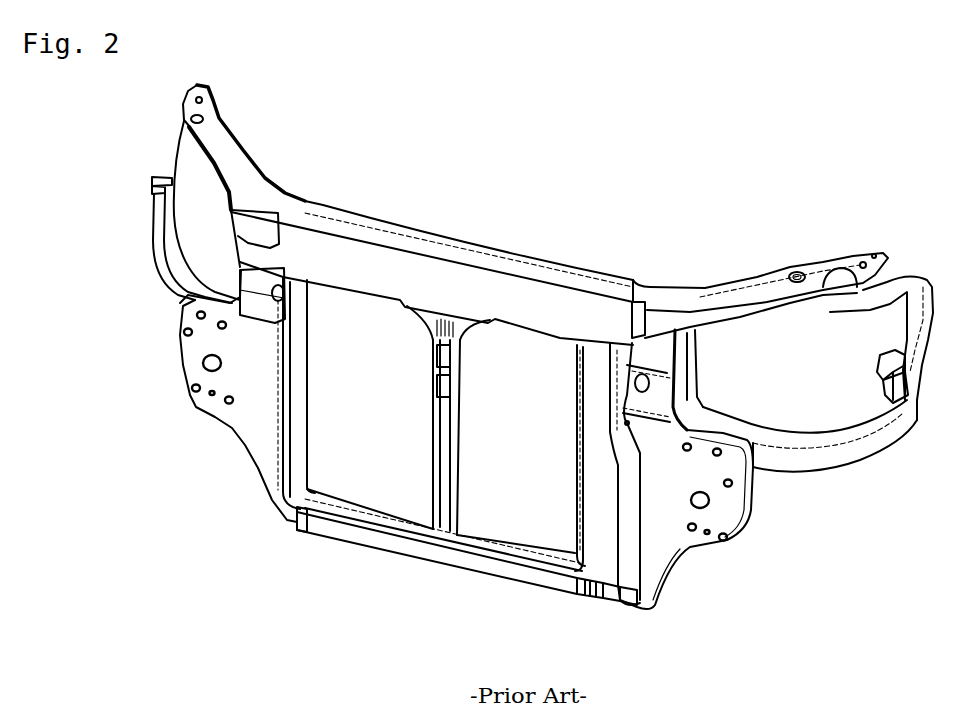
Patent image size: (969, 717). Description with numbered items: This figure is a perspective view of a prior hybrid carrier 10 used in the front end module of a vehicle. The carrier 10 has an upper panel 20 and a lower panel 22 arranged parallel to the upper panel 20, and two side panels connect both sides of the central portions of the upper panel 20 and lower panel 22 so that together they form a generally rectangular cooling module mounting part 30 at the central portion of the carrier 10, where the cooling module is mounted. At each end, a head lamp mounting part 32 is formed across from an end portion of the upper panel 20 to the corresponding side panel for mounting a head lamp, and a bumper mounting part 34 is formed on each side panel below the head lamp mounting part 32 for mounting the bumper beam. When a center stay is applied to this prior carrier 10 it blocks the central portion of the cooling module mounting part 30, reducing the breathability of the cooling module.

The carrier 10 is at (336, 190).
The upper panel 20 is at (515, 260).
The lower panel 22 is at (423, 550).
The cooling module mounting part 30 is at (393, 470).
The head lamp mounting part 32 is at (193, 193).
The bumper mounting part 34 is at (195, 343).